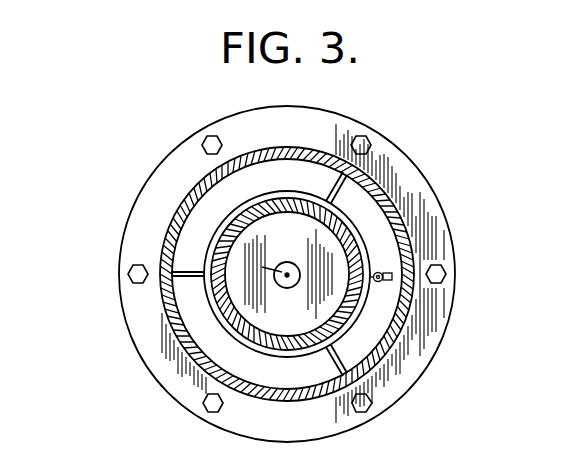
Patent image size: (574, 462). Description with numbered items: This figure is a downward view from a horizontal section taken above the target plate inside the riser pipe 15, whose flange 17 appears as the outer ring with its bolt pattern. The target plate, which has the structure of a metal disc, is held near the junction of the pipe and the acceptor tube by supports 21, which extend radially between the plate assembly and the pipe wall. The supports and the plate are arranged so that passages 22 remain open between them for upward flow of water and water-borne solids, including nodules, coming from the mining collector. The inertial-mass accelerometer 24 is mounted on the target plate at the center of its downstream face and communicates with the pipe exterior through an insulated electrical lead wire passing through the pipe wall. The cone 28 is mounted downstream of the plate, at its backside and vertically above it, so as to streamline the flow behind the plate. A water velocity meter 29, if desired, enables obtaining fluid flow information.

The riser pipe 15 is at (183, 197).
The flange 17 is at (123, 313).
The supports 21 is at (165, 270).
The passages 22 is at (212, 338).
The inertial-mass accelerometer 24 is at (298, 283).
The cone 28 is at (355, 243).
The water velocity meter 29 is at (382, 272).